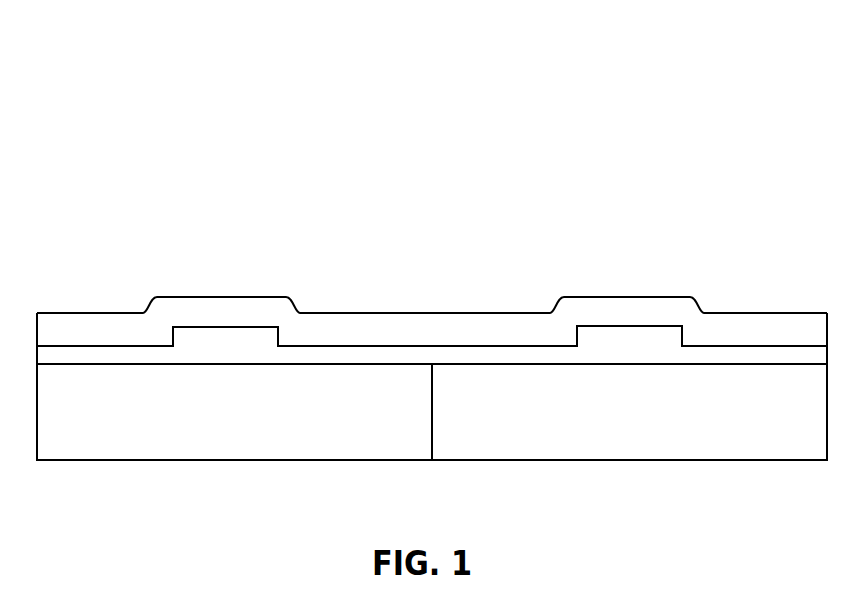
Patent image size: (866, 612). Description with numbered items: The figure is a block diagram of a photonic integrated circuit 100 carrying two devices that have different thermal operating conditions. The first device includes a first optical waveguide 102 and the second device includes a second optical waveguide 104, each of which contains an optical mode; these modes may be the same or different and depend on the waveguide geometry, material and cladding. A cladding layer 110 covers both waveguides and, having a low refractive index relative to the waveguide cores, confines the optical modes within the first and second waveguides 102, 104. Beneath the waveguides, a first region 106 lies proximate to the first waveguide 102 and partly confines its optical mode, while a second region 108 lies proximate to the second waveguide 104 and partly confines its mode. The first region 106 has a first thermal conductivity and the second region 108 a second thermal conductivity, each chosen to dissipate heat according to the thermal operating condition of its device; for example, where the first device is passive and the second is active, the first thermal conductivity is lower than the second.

The photonic integrated circuit 100 is at (388, 89).
The first optical waveguide 102 is at (203, 354).
The second optical waveguide 104 is at (650, 354).
The first region 106 is at (257, 422).
The second region 108 is at (650, 422).
The cladding layer 110 is at (453, 338).